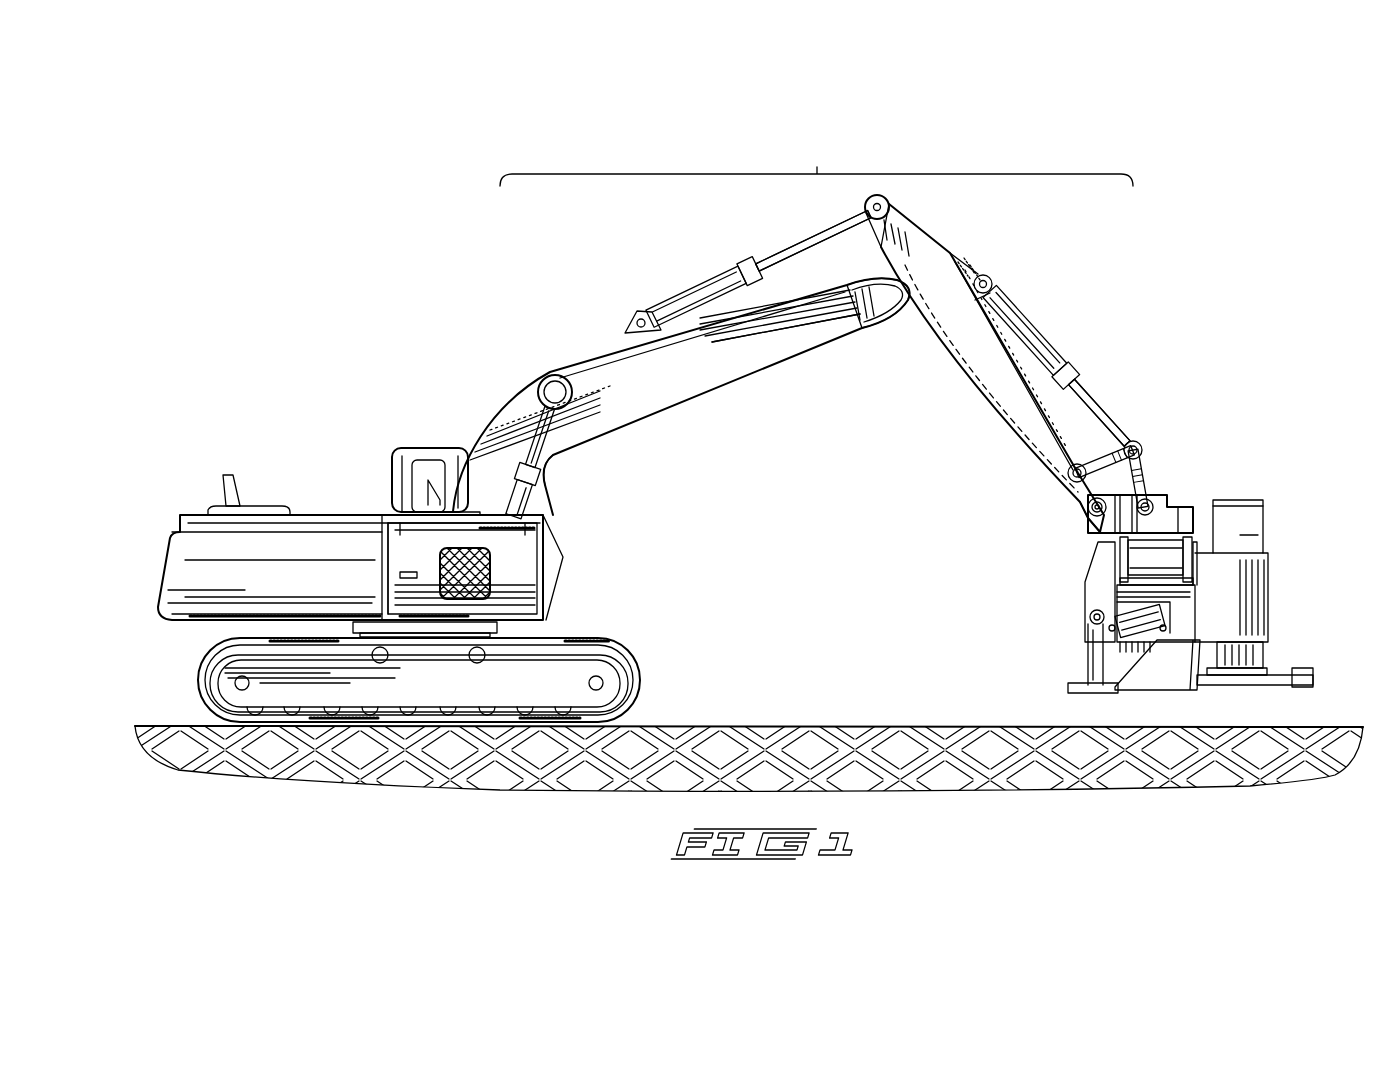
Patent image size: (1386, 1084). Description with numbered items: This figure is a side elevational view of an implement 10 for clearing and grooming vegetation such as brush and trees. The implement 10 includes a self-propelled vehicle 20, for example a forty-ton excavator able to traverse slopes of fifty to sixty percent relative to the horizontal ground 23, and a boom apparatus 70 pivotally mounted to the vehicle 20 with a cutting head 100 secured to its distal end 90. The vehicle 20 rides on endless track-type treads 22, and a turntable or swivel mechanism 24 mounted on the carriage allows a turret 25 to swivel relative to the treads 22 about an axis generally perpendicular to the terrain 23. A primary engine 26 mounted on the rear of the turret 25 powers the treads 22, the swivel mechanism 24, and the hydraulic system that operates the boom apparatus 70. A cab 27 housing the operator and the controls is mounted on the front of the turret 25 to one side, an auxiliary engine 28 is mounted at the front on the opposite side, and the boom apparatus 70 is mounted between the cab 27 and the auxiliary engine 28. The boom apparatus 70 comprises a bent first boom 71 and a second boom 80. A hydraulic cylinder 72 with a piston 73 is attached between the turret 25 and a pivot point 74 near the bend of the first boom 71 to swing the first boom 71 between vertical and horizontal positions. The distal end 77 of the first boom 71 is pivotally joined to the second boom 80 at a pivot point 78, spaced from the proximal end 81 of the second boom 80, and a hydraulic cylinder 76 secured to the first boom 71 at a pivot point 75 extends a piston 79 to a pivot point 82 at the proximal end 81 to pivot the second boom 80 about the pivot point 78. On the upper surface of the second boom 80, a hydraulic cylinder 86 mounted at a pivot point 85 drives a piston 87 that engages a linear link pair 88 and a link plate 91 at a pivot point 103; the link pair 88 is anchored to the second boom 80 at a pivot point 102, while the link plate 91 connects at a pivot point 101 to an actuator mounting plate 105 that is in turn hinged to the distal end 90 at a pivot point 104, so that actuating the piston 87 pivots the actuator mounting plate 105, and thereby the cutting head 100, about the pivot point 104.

The implement 10 is at (385, 232).
The self-propelled vehicle 20 is at (325, 410).
The treads 22 is at (640, 642).
The ground 23 is at (748, 722).
The swivel mechanism 24 is at (502, 630).
The turret 25 is at (148, 448).
The primary engine 26 is at (255, 505).
The cab 27 is at (450, 447).
The auxiliary engine 28 is at (530, 551).
The boom apparatus 70 is at (816, 164).
The first boom 71 is at (645, 365).
The hydraulic cylinder 72 is at (535, 497).
The piston 73 is at (550, 432).
The pivot point 74 is at (550, 376).
The pivot point 75 is at (638, 318).
The hydraulic cylinder 76 is at (714, 287).
The distal end 77 is at (842, 345).
The pivot point 78 is at (912, 320).
The piston 79 is at (830, 229).
The second boom 80 is at (975, 362).
The proximal end 81 is at (893, 218).
The pivot point 82 is at (892, 204).
The pivot point 85 is at (992, 283).
The hydraulic cylinder 86 is at (1020, 320).
The piston 87 is at (1085, 385).
The linear link pair 88 is at (1100, 462).
The distal end 90 is at (1076, 498).
The link plate 91 is at (1145, 480).
The cutting head 100 is at (1305, 550).
The pivot point 101 is at (1147, 503).
The pivot point 102 is at (1068, 475).
The pivot point 103 is at (1140, 450).
The pivot point 104 is at (1090, 522).
The actuator mounting plate 105 is at (1155, 520).